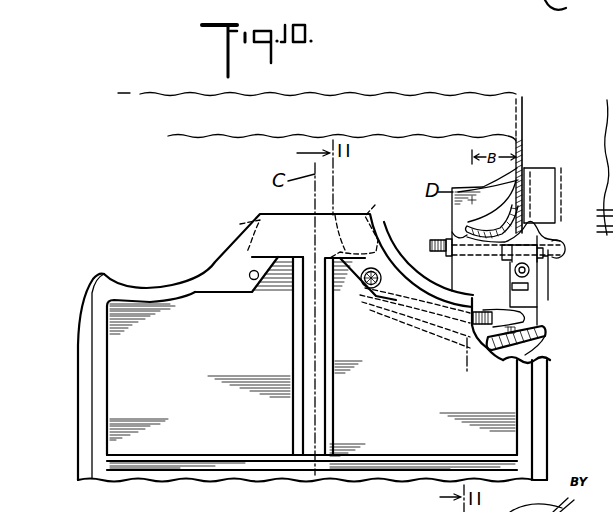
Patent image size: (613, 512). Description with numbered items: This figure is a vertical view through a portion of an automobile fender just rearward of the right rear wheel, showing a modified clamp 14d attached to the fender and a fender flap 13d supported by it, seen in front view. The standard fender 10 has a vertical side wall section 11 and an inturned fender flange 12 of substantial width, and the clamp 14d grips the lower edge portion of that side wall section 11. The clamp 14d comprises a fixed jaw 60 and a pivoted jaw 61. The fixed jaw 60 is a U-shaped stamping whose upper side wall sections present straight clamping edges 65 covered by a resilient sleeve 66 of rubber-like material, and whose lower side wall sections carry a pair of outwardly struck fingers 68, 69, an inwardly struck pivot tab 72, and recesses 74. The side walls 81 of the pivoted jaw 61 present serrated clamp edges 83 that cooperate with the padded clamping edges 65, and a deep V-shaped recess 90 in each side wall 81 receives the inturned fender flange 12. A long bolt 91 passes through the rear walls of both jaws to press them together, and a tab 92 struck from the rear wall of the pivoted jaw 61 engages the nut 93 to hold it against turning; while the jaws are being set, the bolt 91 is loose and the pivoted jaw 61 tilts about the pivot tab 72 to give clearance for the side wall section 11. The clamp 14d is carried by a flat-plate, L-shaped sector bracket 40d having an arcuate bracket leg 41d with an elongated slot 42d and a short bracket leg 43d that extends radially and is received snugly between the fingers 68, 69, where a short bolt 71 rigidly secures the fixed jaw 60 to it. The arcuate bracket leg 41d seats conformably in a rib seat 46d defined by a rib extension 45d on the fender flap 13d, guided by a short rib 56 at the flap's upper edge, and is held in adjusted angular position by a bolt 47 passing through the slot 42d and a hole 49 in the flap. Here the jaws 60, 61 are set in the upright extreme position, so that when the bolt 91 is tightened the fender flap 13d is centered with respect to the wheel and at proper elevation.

The standard fender 10 is at (472, 110).
The vertical side wall section 11 is at (523, 147).
The inturned fender flange 12 is at (548, 212).
The fender flap 13d is at (93, 279).
The clamp 14d is at (445, 214).
The bracket 40d is at (548, 316).
The arcuate bracket leg 41d is at (540, 342).
The elongated slot 42d is at (547, 331).
The short bracket leg 43d is at (540, 300).
The rib extensions 45d is at (503, 352).
The rib seats 46d is at (473, 338).
The bolt 47 is at (367, 288).
The hole 49 is at (253, 280).
The short ribs 56 is at (305, 222).
The fixed jaw 60 is at (560, 238).
The pivoted jaw 61 is at (452, 188).
The clamping edges 65 is at (525, 183).
The sleeve 66 is at (556, 195).
The finger 68 is at (502, 255).
The finger 69 is at (550, 262).
The short bolt 71 is at (510, 281).
The pivot tab 72 is at (530, 271).
The recesses 74 is at (565, 250).
The side walls 81 is at (468, 283).
The serrated clamp edges 83 is at (490, 177).
The V-shaped recess 90 is at (450, 238).
The long bolt 91 is at (429, 246).
The tab 92 is at (447, 243).
The nut 93 is at (418, 297).